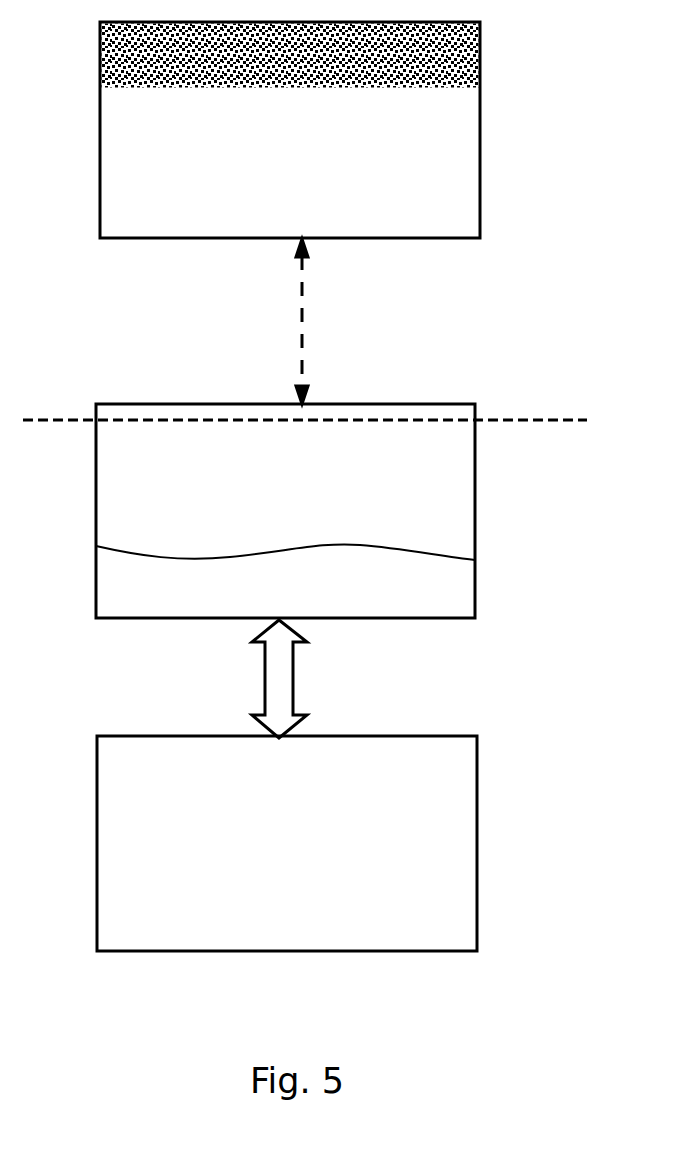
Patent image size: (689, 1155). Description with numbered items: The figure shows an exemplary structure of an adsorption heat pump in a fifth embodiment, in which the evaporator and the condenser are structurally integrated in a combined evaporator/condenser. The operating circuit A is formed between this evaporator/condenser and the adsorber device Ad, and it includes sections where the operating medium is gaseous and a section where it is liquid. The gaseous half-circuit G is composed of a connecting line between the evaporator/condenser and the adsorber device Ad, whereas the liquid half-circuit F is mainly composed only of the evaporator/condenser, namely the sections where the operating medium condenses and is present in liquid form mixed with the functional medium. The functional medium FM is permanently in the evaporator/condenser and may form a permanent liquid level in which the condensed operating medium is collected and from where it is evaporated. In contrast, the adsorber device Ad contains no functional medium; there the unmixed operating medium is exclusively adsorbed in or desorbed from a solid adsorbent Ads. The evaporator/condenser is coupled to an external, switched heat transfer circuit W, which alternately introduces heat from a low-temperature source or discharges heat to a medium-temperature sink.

The adsorber device Ad is at (290, 130).
The adsorbent Ads is at (480, 57).
The operating circuit A is at (595, 346).
The gaseous half-circuit G is at (521, 369).
The liquid half-circuit F is at (521, 472).
The functional medium FM is at (452, 591).
The heat transfer circuit W is at (287, 843).